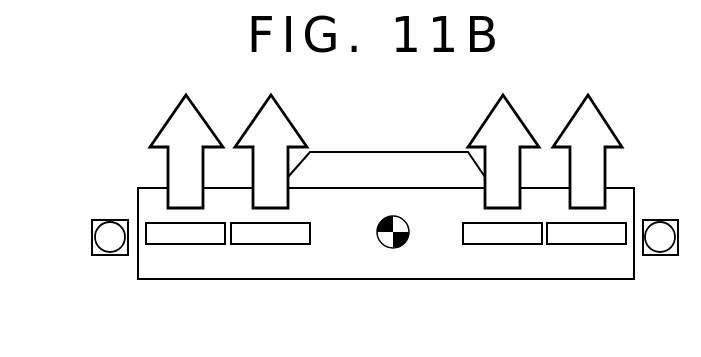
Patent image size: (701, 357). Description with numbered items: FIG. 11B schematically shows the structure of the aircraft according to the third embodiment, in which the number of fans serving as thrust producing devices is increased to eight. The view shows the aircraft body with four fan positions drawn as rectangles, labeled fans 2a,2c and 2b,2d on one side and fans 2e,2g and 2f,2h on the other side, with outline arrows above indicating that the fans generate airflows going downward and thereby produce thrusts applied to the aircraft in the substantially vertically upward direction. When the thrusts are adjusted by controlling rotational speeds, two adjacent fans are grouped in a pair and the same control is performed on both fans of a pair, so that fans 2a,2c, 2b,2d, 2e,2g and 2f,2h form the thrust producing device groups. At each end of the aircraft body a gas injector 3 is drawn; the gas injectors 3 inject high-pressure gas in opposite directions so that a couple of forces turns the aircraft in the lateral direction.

The gas injector 3 is at (111, 255).
The fans 2a,2c is at (185, 244).
The fans 2b,2d is at (270, 244).
The fans 2e,2g is at (503, 244).
The fans 2f,2h is at (588, 244).